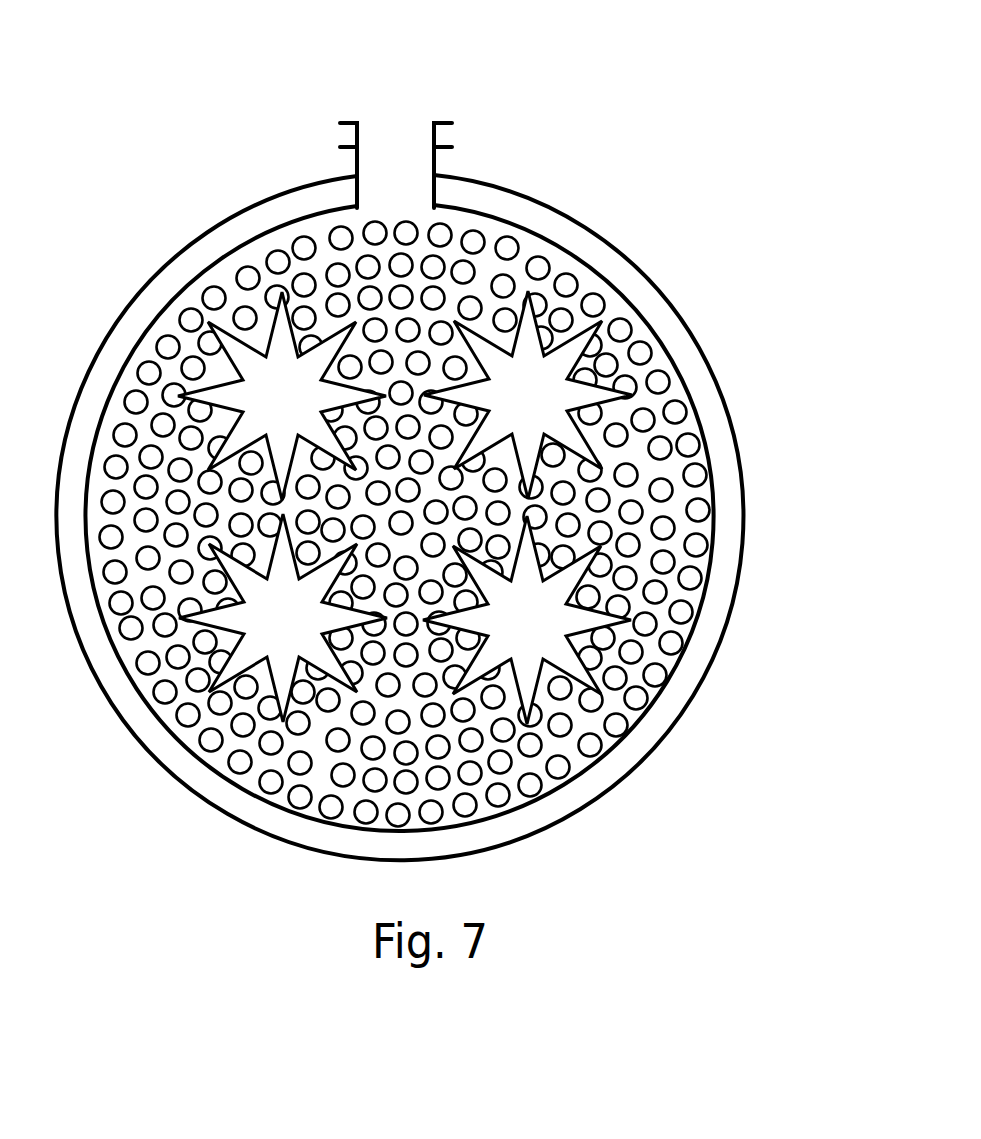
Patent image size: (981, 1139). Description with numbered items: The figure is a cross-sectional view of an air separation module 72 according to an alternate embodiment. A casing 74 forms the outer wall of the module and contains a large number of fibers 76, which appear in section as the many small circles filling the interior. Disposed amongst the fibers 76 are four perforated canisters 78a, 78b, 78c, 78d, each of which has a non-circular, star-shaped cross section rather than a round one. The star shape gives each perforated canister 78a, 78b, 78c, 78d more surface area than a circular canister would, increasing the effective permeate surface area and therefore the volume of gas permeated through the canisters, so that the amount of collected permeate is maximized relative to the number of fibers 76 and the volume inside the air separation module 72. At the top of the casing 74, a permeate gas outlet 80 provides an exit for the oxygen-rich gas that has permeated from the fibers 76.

The air separation module 72 is at (222, 127).
The casing 74 is at (576, 225).
The fibers 76 is at (643, 472).
The perforated canister 78a is at (605, 385).
The perforated canister 78b is at (547, 667).
The perforated canister 78c is at (263, 668).
The perforated canister 78d is at (218, 378).
The permeate gas outlet 80 is at (435, 158).